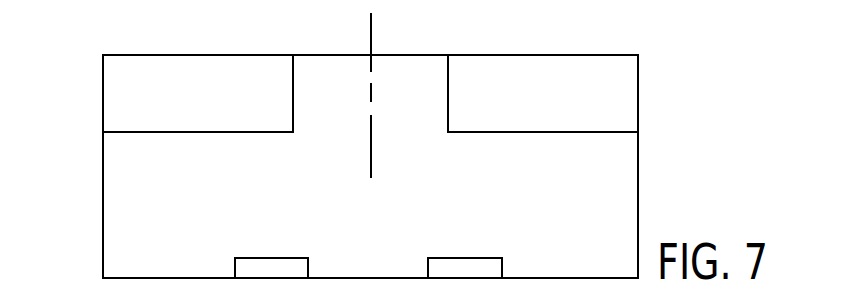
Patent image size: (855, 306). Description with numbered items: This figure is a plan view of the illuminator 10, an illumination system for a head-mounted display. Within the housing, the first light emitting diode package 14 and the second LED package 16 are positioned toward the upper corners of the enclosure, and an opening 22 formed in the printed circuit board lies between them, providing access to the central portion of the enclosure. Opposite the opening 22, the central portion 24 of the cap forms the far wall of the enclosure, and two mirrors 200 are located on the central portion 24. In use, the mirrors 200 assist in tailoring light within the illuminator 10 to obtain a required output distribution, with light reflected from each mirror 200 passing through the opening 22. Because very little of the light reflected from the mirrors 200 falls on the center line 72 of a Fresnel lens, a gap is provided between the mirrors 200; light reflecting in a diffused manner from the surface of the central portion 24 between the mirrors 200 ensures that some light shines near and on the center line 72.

The illumination system 10 is at (62, 57).
The first light emitting diode package 14 is at (213, 108).
The second LED package 16 is at (549, 108).
The opening 22 is at (428, 55).
The central portion 24 is at (545, 278).
The center line 72 is at (390, 92).
The mirrors 200 is at (270, 258).